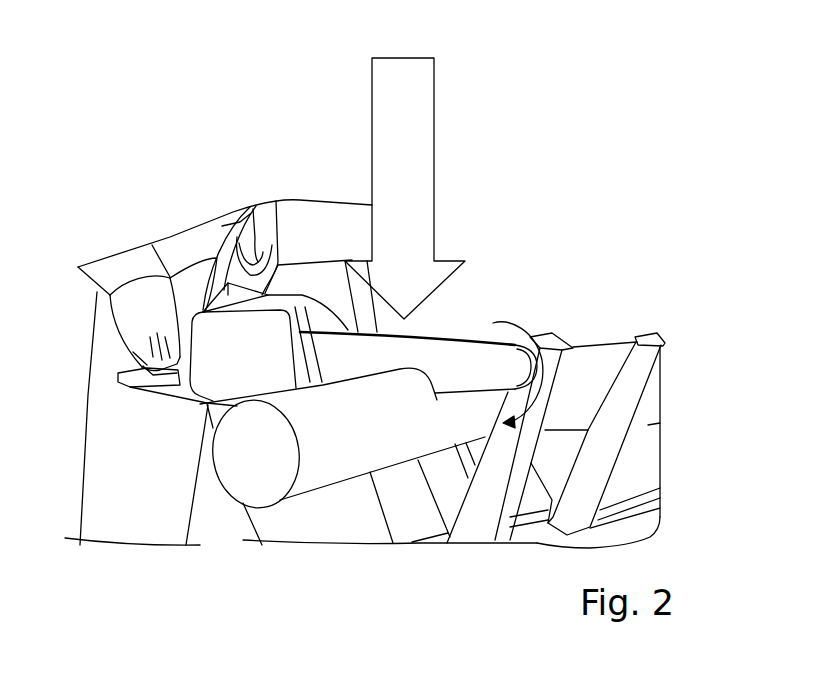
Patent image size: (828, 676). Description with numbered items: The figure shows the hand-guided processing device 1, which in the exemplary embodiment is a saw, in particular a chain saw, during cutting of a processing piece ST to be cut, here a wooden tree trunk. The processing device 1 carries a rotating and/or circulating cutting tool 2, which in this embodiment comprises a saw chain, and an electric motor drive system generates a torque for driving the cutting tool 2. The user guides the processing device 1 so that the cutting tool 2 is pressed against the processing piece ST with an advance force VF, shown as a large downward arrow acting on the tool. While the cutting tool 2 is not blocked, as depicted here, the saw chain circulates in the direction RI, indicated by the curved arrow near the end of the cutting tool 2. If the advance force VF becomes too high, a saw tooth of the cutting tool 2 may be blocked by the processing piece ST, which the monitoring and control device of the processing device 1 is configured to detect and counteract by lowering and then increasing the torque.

The processing device 1 is at (195, 137).
The cutting tool 2 is at (475, 355).
The processing piece ST is at (235, 475).
The advance force VF is at (405, 188).
The direction RI is at (535, 340).